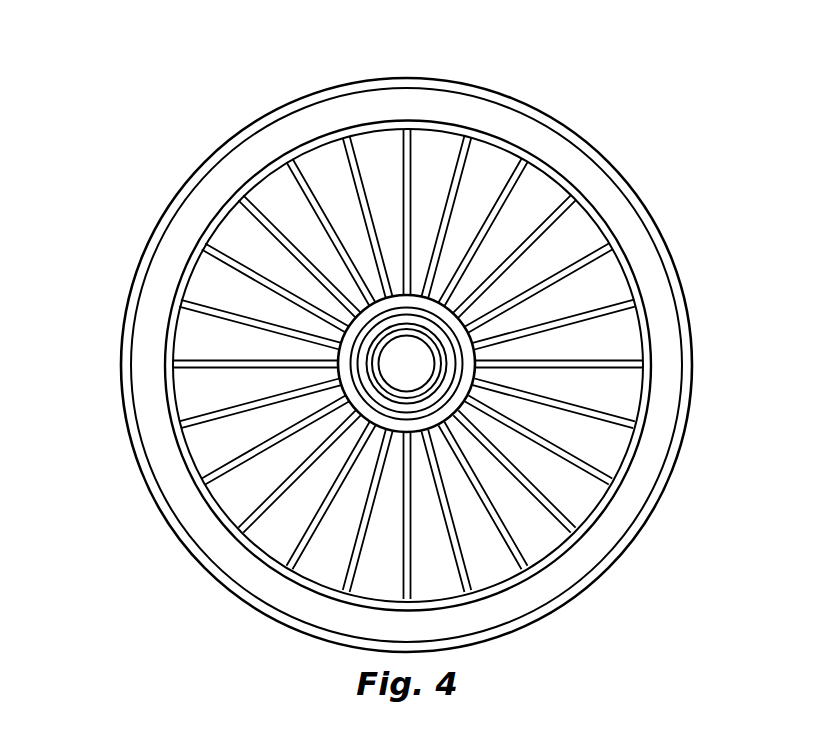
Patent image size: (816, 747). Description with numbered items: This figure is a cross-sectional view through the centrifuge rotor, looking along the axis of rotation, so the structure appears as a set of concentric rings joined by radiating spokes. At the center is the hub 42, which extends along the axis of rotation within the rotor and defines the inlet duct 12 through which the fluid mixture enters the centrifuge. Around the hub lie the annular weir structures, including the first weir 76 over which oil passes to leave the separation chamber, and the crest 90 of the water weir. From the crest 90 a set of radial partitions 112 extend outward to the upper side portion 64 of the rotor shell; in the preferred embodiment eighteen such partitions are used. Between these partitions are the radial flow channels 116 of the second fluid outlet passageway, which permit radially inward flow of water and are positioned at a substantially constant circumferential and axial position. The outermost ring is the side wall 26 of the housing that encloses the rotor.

The inlet duct 12 is at (396, 385).
The side wall 26 is at (499, 93).
The hub 42 is at (380, 366).
The upper side portion 64 is at (548, 158).
The first weir 76 is at (354, 368).
The crest 90 is at (311, 430).
The radial partitions 112 is at (358, 165).
The radial flow channels 116 is at (225, 285).